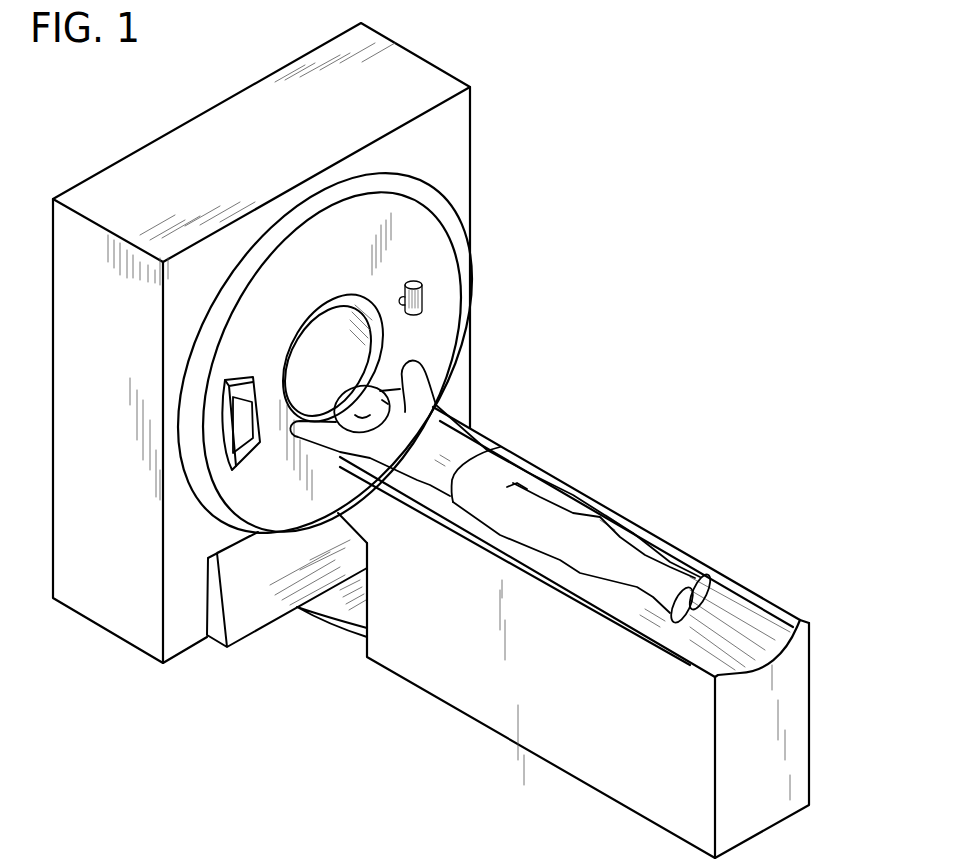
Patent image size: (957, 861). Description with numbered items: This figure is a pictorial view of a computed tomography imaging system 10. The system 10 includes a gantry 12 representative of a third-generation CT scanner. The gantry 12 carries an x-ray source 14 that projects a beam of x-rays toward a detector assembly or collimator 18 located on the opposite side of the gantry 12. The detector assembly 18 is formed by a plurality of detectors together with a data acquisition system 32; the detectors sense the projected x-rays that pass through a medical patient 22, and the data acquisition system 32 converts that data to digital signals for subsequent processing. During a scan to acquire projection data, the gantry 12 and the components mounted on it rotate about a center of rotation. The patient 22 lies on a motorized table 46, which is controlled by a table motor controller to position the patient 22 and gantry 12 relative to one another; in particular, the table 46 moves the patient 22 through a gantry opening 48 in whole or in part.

The computed tomography (CT) imaging system 10 is at (615, 305).
The gantry 12 is at (437, 260).
The x-ray source 14 is at (424, 303).
The detector assembly 18 is at (245, 452).
The medical patient 22 is at (470, 423).
The data acquisition system (DAS) 32 is at (245, 377).
The motorized table 46 is at (608, 777).
The gantry opening 48 is at (320, 350).